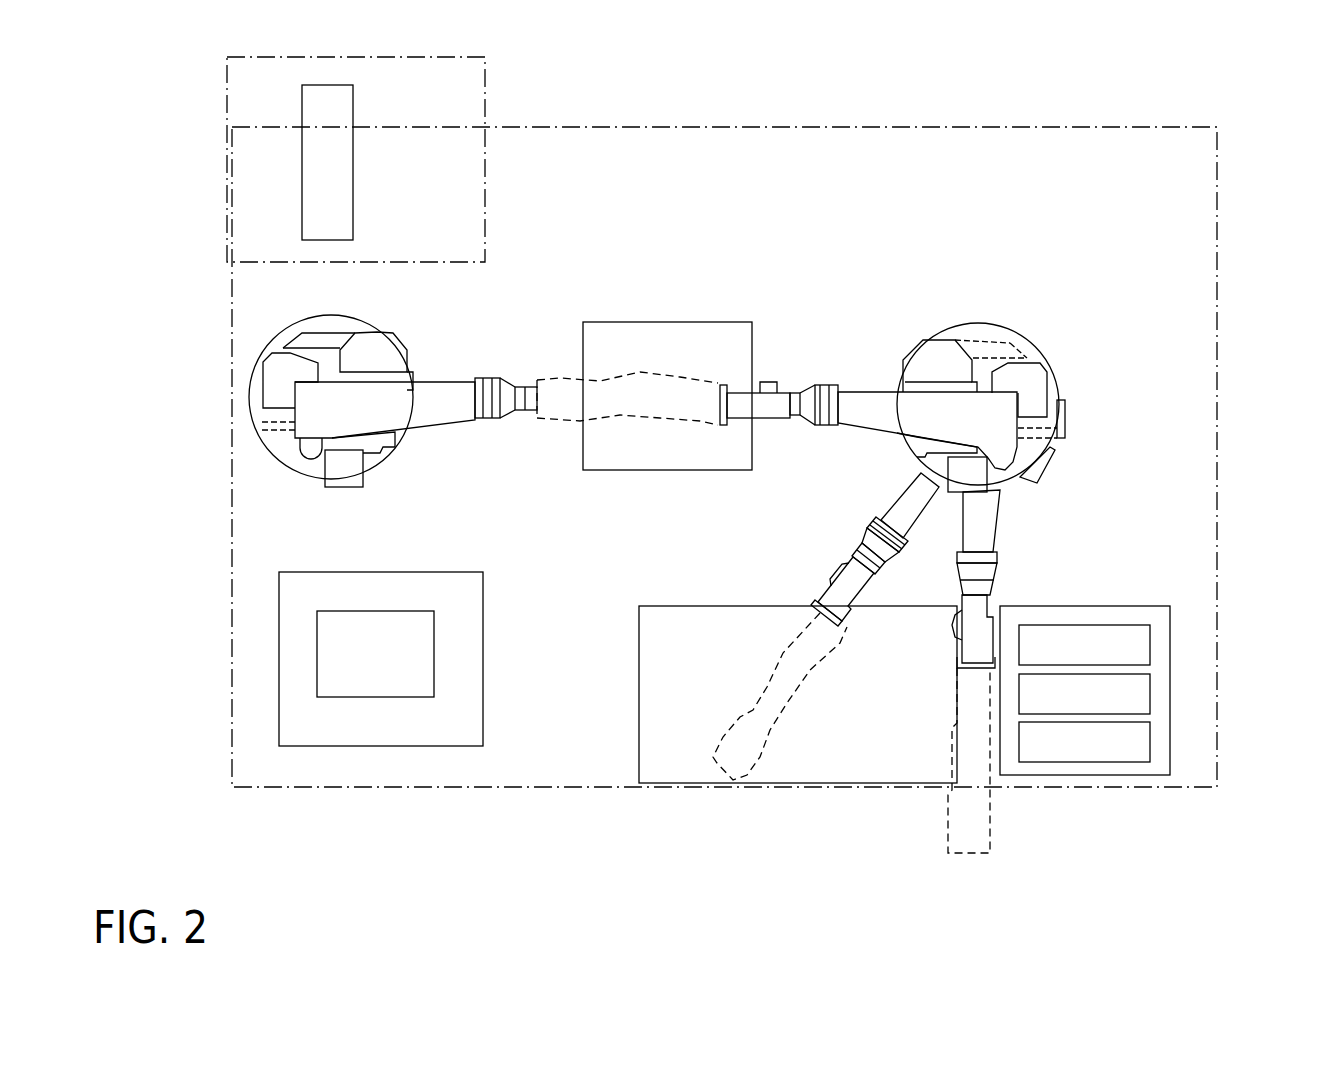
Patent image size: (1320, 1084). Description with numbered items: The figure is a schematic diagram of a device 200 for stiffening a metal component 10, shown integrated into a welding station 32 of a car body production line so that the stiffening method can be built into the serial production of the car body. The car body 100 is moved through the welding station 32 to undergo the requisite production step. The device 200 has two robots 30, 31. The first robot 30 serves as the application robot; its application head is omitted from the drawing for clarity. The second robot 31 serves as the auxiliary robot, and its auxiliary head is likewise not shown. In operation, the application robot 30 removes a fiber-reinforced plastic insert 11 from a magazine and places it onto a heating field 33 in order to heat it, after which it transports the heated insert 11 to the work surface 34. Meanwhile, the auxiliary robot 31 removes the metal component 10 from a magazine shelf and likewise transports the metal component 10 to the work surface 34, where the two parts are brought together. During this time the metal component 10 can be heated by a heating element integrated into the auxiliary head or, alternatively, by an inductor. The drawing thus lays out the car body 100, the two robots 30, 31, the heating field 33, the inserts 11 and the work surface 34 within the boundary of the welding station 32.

The device 200 is at (232, 514).
The car body 100 is at (322, 165).
The metal component 10 is at (345, 658).
The fiber-reinforced plastic insert 11 is at (1134, 645).
The first robot 30 is at (1027, 380).
The second robot 31 is at (284, 379).
The welding station 32 is at (232, 461).
The heating field 33 is at (821, 752).
The work surface 34 is at (666, 350).